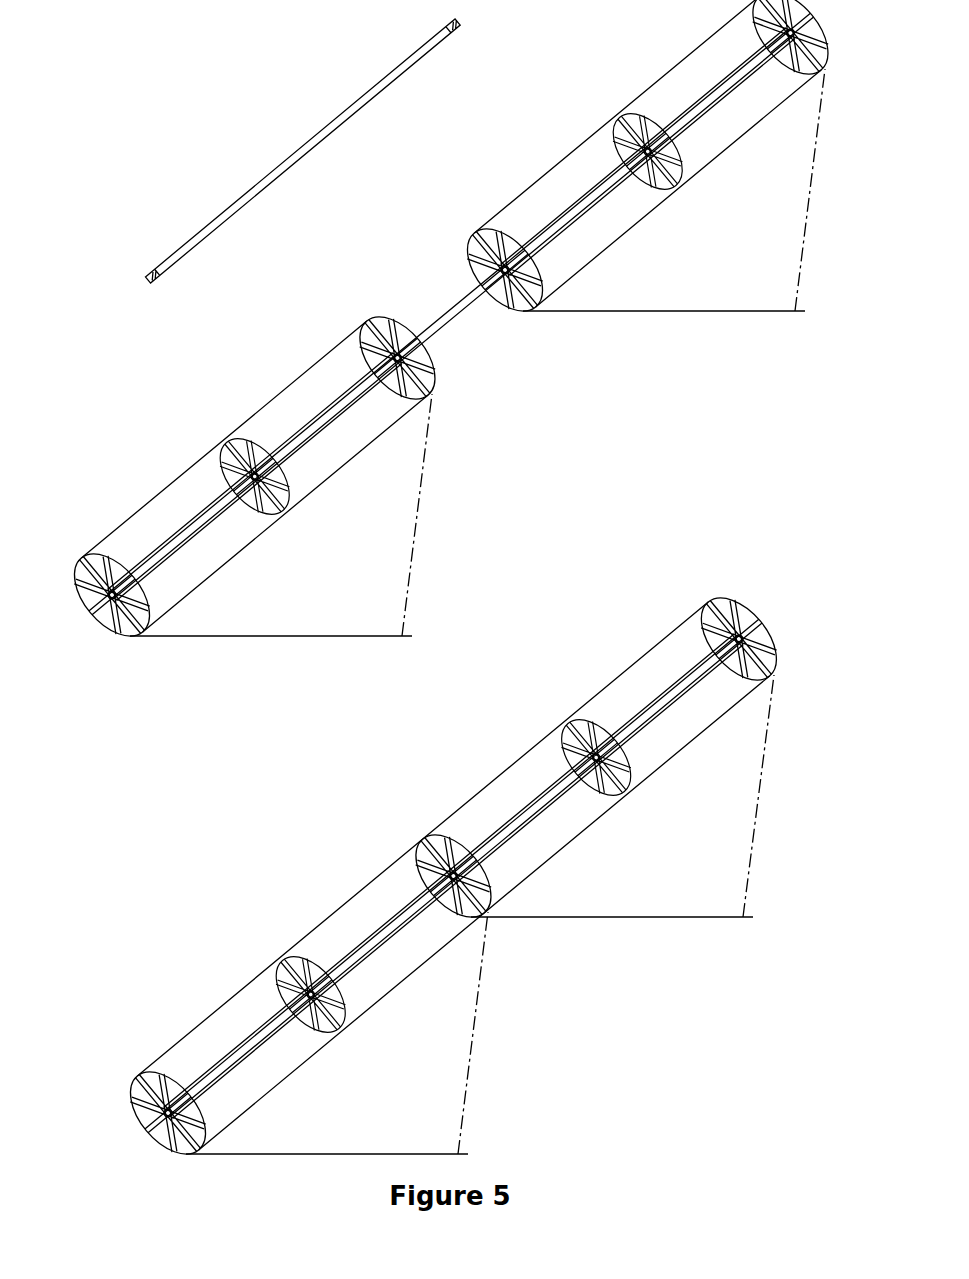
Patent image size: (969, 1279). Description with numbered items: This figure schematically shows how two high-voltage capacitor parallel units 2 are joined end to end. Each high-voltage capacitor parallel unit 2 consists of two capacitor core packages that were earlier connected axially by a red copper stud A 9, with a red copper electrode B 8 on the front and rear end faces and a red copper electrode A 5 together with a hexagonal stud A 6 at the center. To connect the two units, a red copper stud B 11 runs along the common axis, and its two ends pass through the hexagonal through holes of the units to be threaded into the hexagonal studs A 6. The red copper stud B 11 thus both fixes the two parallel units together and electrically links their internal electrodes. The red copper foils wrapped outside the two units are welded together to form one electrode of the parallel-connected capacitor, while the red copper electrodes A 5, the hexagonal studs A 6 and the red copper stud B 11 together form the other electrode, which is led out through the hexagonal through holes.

The high-voltage capacitor parallel unit 2 is at (477, 619).
The red copper electrode A 5 is at (680, 182).
The hexagonal stud A 6 is at (668, 132).
The red copper electrode B 8 is at (822, 48).
The red copper stud A 9 is at (662, 150).
The red copper stud B 11 is at (448, 320).